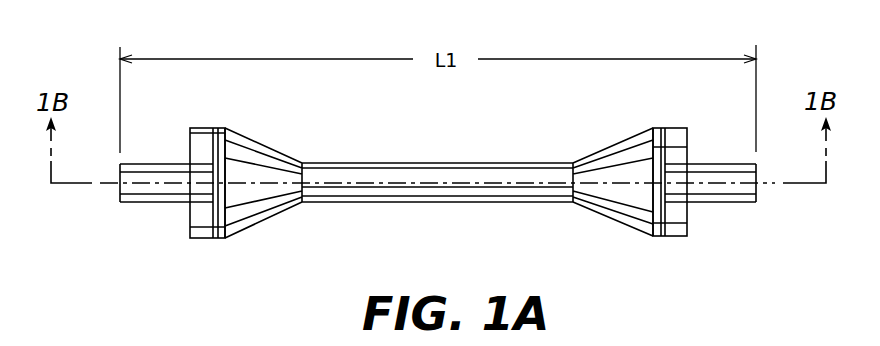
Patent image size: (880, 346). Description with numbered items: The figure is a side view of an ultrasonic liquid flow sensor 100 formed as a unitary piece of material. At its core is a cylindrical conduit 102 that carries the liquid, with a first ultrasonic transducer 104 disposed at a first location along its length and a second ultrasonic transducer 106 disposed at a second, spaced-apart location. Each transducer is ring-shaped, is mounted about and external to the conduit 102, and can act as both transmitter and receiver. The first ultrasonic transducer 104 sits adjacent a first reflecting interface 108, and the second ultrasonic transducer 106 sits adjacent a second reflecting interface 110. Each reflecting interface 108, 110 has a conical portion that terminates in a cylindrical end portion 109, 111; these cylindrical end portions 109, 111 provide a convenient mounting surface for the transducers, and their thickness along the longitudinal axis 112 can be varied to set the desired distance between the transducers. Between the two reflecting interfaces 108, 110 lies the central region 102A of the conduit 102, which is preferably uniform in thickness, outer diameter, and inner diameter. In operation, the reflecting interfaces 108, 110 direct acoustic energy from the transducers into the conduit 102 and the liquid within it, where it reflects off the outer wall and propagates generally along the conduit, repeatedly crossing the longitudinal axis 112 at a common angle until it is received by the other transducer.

The flow sensor 100 is at (166, 51).
The conduit 102 is at (163, 204).
The central region 102A is at (577, 203).
The first ultrasonic transducer 104 is at (685, 238).
The second ultrasonic transducer 106 is at (195, 240).
The first reflecting interface 108 is at (620, 141).
The cylindrical end portion 109 is at (657, 238).
The second reflecting interface 110 is at (263, 145).
The cylindrical end portion 111 is at (219, 240).
The longitudinal axis 112 is at (378, 182).